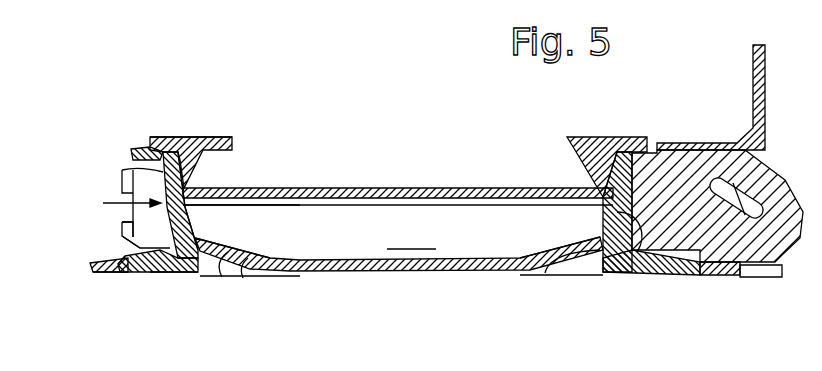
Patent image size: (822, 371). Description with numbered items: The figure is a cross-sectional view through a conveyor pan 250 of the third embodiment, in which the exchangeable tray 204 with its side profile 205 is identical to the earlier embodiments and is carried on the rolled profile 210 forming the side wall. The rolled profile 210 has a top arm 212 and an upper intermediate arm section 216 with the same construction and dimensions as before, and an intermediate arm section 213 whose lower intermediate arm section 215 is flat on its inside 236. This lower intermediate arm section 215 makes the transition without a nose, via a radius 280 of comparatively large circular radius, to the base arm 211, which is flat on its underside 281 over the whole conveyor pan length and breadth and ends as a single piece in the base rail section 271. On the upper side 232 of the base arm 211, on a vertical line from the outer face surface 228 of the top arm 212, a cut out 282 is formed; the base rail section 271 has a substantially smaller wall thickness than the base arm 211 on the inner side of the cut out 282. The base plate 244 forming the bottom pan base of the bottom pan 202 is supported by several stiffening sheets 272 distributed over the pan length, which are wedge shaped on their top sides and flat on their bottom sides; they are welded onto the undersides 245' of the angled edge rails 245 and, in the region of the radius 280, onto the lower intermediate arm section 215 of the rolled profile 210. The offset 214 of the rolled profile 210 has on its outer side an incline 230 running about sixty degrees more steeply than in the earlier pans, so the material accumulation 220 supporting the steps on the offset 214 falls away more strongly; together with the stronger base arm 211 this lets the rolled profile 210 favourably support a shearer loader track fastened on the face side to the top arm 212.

The bottom pan 202 is at (411, 237).
The exchangeable tray 204 is at (473, 156).
The side profile 205 is at (207, 138).
The rolled profile 210 is at (127, 117).
The base arm 211 is at (137, 278).
The top arm 212 is at (138, 150).
The intermediate arm section 213 is at (655, 182).
The offset 214 is at (110, 197).
The lower intermediate arm section 215 is at (188, 229).
The upper intermediate arm section 216 is at (125, 171).
The material accumulation 220 is at (640, 273).
The outer face surface 228 is at (130, 151).
The incline 230 is at (127, 226).
The upper side 232 is at (125, 239).
The inside 236 is at (195, 212).
The base plate 244 is at (414, 272).
The angled edge rail 245 is at (397, 273).
The underside of angled edge rail 245' is at (218, 299).
The conveyor pan 250 is at (380, 76).
The base rail section 271 is at (97, 277).
The stiffening sheet 272 is at (242, 266).
The radius 280 is at (193, 275).
The underside 281 is at (157, 277).
The cut out 282 is at (100, 257).